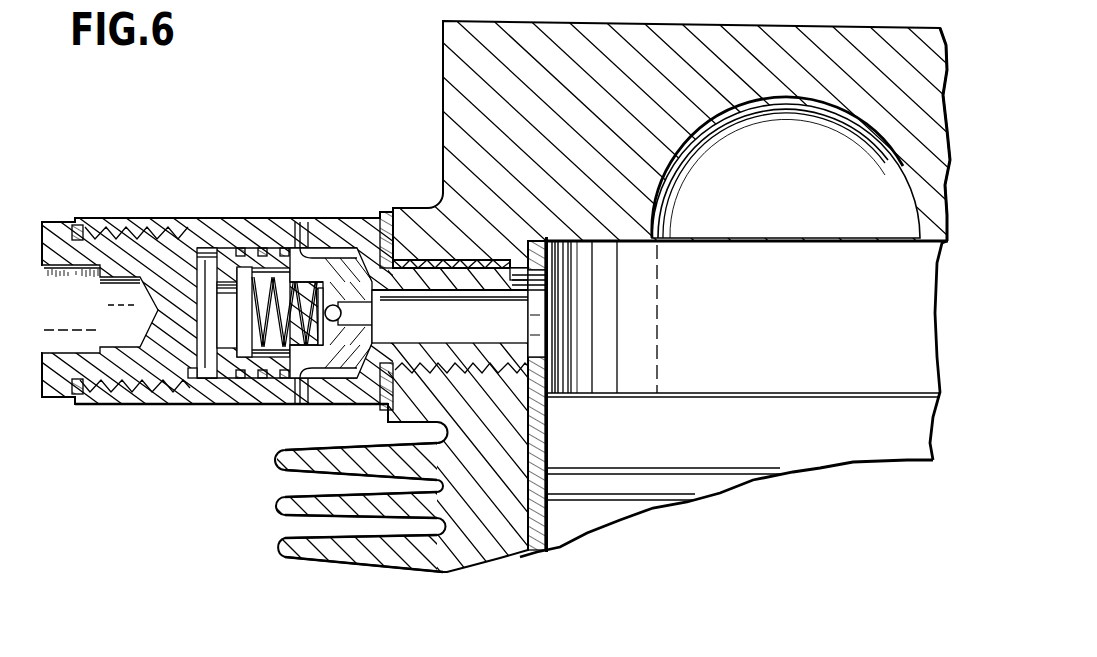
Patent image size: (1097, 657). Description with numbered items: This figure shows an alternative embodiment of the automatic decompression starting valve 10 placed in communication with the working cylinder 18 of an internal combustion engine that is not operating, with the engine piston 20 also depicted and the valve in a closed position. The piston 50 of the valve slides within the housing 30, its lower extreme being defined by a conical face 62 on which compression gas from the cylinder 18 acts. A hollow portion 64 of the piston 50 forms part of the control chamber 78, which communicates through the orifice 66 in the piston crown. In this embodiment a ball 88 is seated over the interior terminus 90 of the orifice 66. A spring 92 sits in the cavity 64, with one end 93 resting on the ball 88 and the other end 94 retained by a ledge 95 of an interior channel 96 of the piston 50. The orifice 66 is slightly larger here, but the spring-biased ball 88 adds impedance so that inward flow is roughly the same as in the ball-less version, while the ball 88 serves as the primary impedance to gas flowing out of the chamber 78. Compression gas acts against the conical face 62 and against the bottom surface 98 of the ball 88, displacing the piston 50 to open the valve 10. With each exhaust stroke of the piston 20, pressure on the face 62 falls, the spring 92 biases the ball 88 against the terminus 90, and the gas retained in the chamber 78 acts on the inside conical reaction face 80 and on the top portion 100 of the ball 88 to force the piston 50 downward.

The automatic decompression starting valve 10 is at (383, 353).
The working cylinder 18 is at (748, 320).
The piston 20 is at (699, 435).
The housing 30 is at (190, 227).
The piston 50 is at (270, 268).
The conical face 62 is at (345, 381).
The hollow portion 64 is at (258, 350).
The orifice 66 is at (390, 323).
The control chamber 78 is at (205, 345).
The inside conical reaction face 80 is at (331, 305).
The ball 88 is at (312, 383).
The interior terminus 90 is at (352, 232).
The spring 92 is at (216, 352).
The one end 93 is at (310, 283).
The other end 94 is at (240, 315).
The ledge 95 is at (213, 250).
The interior channel 96 is at (251, 267).
The bottom surface 98 is at (398, 308).
The top portion 100 is at (342, 284).